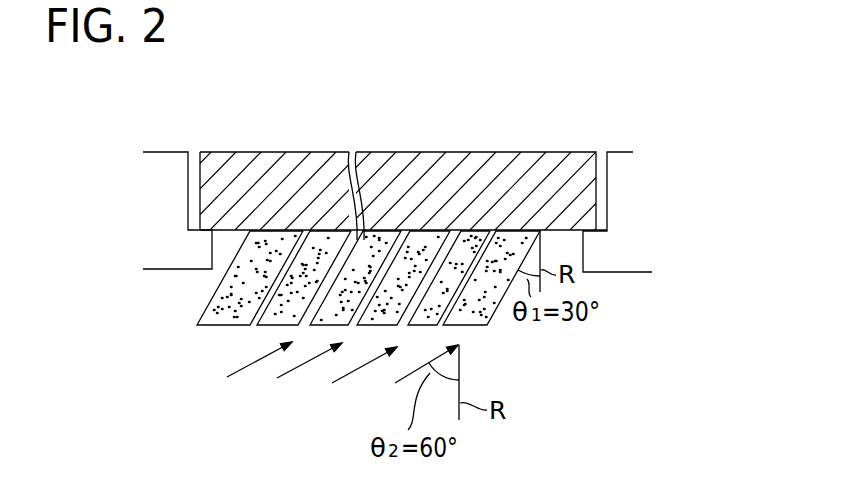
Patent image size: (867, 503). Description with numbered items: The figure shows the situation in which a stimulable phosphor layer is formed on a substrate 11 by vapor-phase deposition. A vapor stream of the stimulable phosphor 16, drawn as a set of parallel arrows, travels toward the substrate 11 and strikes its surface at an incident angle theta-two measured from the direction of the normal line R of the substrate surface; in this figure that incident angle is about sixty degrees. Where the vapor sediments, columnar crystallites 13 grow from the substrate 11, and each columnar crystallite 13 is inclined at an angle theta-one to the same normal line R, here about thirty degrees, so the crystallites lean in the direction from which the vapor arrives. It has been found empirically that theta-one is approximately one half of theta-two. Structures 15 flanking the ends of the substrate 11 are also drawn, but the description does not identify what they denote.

The substrate 11 is at (240, 157).
The columnar crystallite 13 is at (200, 327).
The housing frame step portion 15 is at (171, 166).
The vapor stream of the stimulable phosphor 16 is at (397, 382).